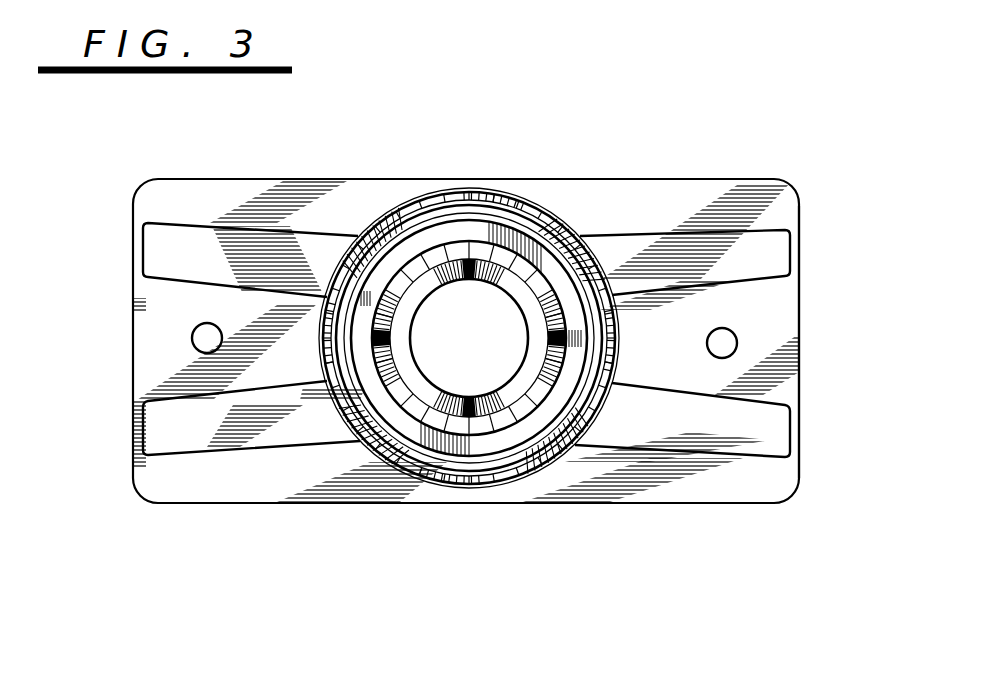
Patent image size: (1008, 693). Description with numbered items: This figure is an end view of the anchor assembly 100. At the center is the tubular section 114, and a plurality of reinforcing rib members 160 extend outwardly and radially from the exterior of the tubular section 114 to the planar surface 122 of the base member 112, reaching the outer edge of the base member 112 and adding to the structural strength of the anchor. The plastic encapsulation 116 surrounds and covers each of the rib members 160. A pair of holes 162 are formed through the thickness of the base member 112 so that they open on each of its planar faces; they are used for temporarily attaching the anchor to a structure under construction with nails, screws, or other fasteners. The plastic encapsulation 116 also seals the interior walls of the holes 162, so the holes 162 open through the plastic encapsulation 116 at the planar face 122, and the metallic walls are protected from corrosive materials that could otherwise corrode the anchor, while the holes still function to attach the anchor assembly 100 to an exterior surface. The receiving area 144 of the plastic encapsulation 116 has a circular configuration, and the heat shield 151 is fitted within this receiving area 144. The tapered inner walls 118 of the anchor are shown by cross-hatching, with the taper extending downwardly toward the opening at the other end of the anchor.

The anchor assembly 100 is at (747, 150).
The base member 112 is at (622, 503).
The tubular section 114 is at (469, 292).
The plastic encapsulation 116 is at (474, 313).
The tapered inner walls 118 is at (469, 338).
The planar surface 122 is at (778, 303).
The receiving area 144 is at (469, 382).
The heat shield 151 is at (472, 374).
The reinforcing rib members 160 is at (206, 250).
The holes 162 is at (193, 350).